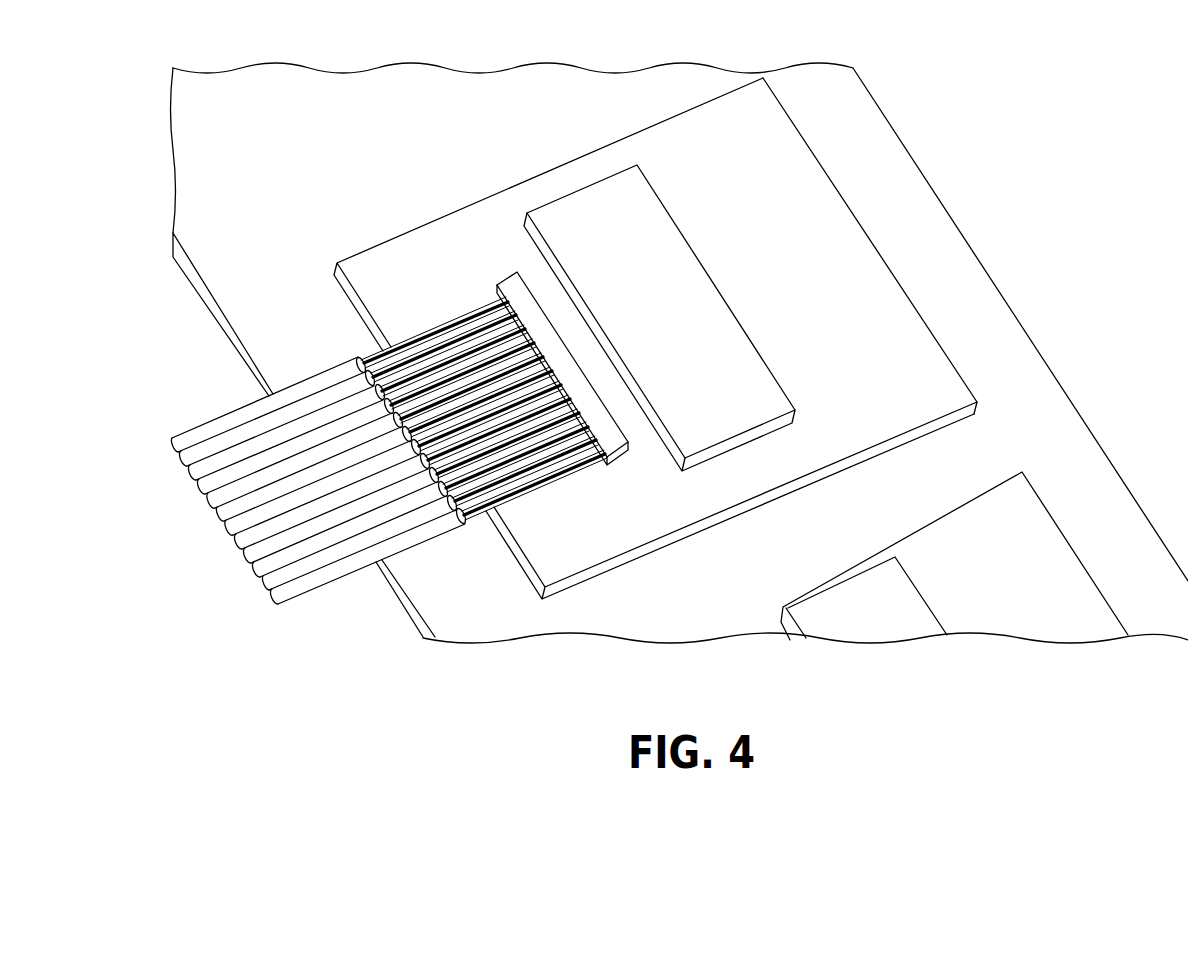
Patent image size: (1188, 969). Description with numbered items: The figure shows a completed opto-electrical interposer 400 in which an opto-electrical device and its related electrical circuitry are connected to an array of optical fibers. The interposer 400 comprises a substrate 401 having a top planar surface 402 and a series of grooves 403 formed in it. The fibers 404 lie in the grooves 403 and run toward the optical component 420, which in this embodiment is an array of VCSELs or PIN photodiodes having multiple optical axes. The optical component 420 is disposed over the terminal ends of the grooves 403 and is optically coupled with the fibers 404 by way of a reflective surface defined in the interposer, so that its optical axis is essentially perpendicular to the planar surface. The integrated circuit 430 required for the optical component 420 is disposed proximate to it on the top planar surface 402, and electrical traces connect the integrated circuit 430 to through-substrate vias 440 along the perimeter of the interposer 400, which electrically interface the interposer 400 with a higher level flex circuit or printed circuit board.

The interposer 400 is at (845, 253).
The substrate 401 is at (508, 542).
The top planar surface 402 is at (575, 553).
The grooves 403 is at (390, 357).
The fibers 404 is at (355, 353).
The optical component 420 is at (513, 283).
The integrated circuit 430 is at (772, 410).
The vias 440 is at (938, 392).